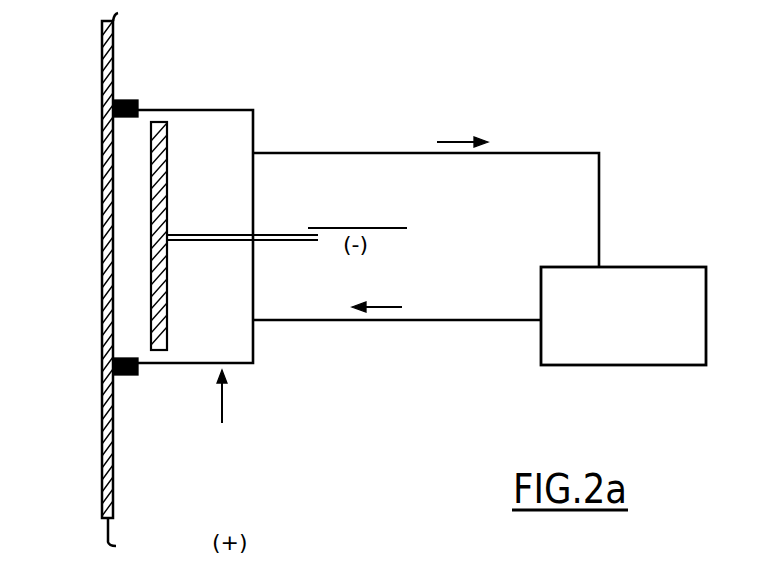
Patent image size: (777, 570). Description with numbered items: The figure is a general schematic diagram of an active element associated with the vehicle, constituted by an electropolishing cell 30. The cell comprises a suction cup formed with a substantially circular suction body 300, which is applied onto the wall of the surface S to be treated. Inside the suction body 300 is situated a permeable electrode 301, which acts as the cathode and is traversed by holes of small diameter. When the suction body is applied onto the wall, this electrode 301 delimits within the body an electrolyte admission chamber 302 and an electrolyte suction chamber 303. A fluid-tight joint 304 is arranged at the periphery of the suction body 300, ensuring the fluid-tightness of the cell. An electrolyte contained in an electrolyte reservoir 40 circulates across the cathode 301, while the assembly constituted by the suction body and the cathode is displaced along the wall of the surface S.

The electropolishing cell 30 is at (222, 410).
The electrolyte reservoir 40 is at (647, 267).
The suction body 300 is at (160, 110).
The permeable electrode 301 is at (167, 170).
The electrolyte admission chamber 302 is at (117, 172).
The electrolyte suction chamber 303 is at (232, 323).
The fluid-tight joint 304 is at (128, 376).
The surface to be treated S is at (102, 300).